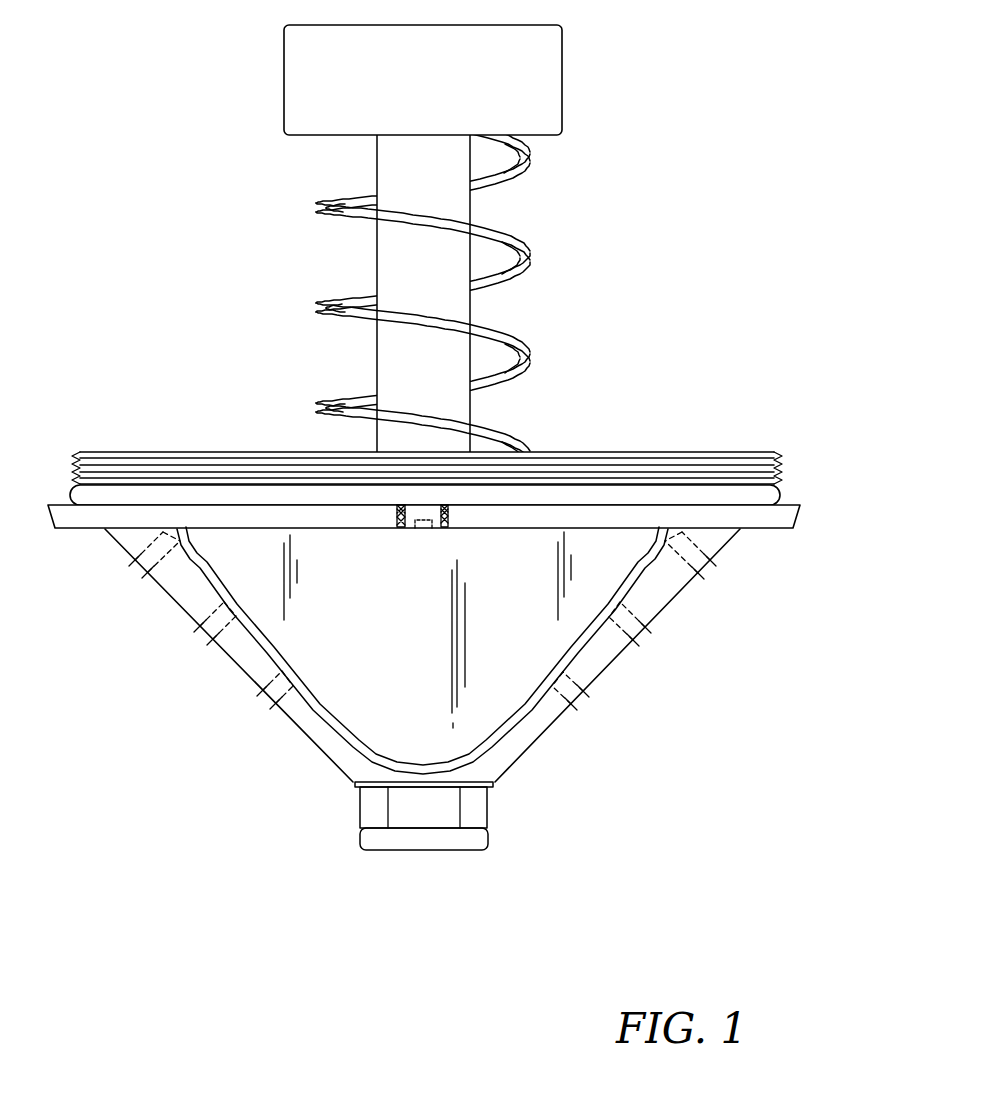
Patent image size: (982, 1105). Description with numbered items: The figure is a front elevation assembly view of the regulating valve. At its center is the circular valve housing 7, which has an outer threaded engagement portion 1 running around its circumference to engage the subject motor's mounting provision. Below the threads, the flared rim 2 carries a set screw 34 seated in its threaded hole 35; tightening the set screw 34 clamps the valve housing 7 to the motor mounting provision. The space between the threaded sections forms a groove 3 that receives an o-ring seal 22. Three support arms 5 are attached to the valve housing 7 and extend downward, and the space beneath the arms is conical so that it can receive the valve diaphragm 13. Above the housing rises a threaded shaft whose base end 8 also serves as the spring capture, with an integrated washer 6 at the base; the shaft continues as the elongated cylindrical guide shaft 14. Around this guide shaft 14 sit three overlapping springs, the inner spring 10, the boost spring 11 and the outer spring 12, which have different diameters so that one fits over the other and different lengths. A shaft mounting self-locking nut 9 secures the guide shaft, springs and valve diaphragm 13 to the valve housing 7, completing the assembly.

The threaded engagement portion 1 is at (780, 468).
The flared rim 2 is at (772, 528).
The groove 3 is at (148, 480).
The support arm 5 is at (673, 600).
The integrated washer 6 is at (357, 789).
The valve housing 7 is at (655, 447).
The base end of shaft and spring capture 8 is at (568, 75).
The shaft mounting self-locking nut 9 is at (358, 808).
The inner spring 10 is at (503, 327).
The boost spring 11 is at (485, 220).
The outer spring 12 is at (317, 315).
The valve diaphragm 13 is at (323, 609).
The guide shaft 14 is at (473, 197).
The o-ring seal 22 is at (100, 492).
The set screw 34 is at (409, 530).
The threaded hole for set screw 35 is at (447, 528).